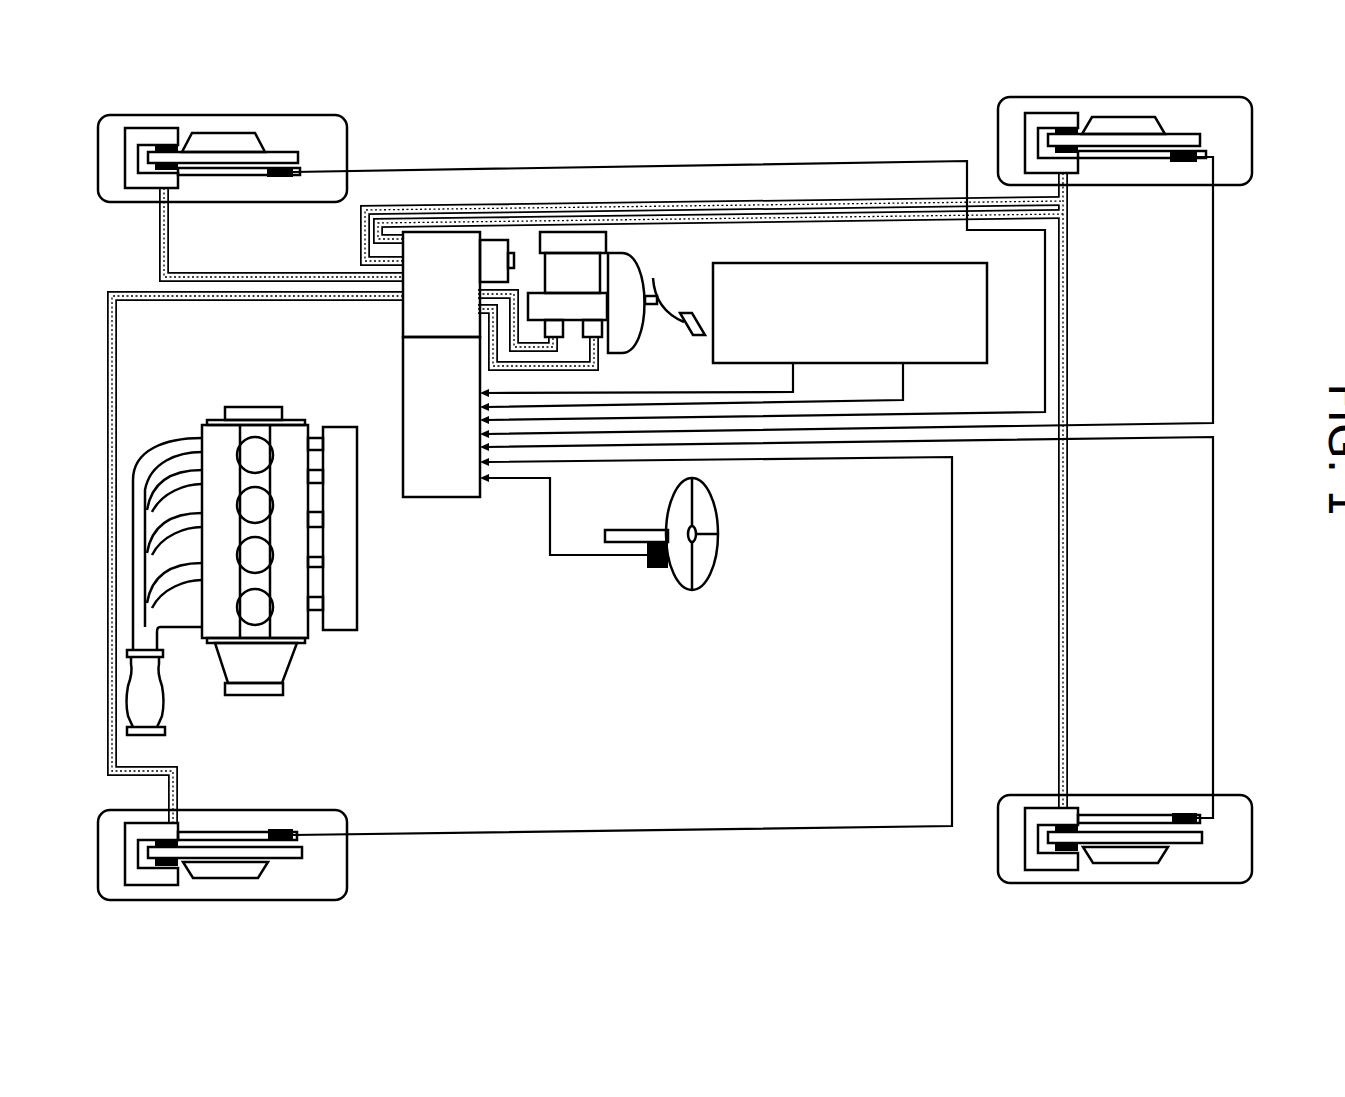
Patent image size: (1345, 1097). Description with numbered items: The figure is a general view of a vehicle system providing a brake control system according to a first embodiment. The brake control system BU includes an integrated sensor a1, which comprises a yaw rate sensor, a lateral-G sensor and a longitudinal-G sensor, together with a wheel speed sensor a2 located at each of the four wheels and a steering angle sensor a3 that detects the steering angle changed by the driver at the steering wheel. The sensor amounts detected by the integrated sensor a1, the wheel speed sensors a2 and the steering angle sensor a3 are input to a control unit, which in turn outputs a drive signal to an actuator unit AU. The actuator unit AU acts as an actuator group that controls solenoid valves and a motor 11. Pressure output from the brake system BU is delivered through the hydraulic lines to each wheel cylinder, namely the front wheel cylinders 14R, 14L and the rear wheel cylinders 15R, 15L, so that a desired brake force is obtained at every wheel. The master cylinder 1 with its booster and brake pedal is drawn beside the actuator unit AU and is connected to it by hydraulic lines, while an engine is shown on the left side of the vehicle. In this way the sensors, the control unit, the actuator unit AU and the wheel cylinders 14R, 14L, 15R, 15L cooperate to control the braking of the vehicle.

The wheel cylinder 14R is at (140, 130).
The wheel cylinder 14L is at (152, 887).
The wheel cylinder 15R is at (1032, 115).
The wheel cylinder 15L is at (1052, 870).
The actuator unit AU is at (438, 245).
The brake control system BU is at (400, 374).
The motor 11 is at (500, 240).
The master cylinder 1 is at (573, 300).
The integrated sensor a1 is at (988, 295).
The wheel speed sensor a2 is at (287, 178).
The steering angle sensor a3 is at (652, 570).